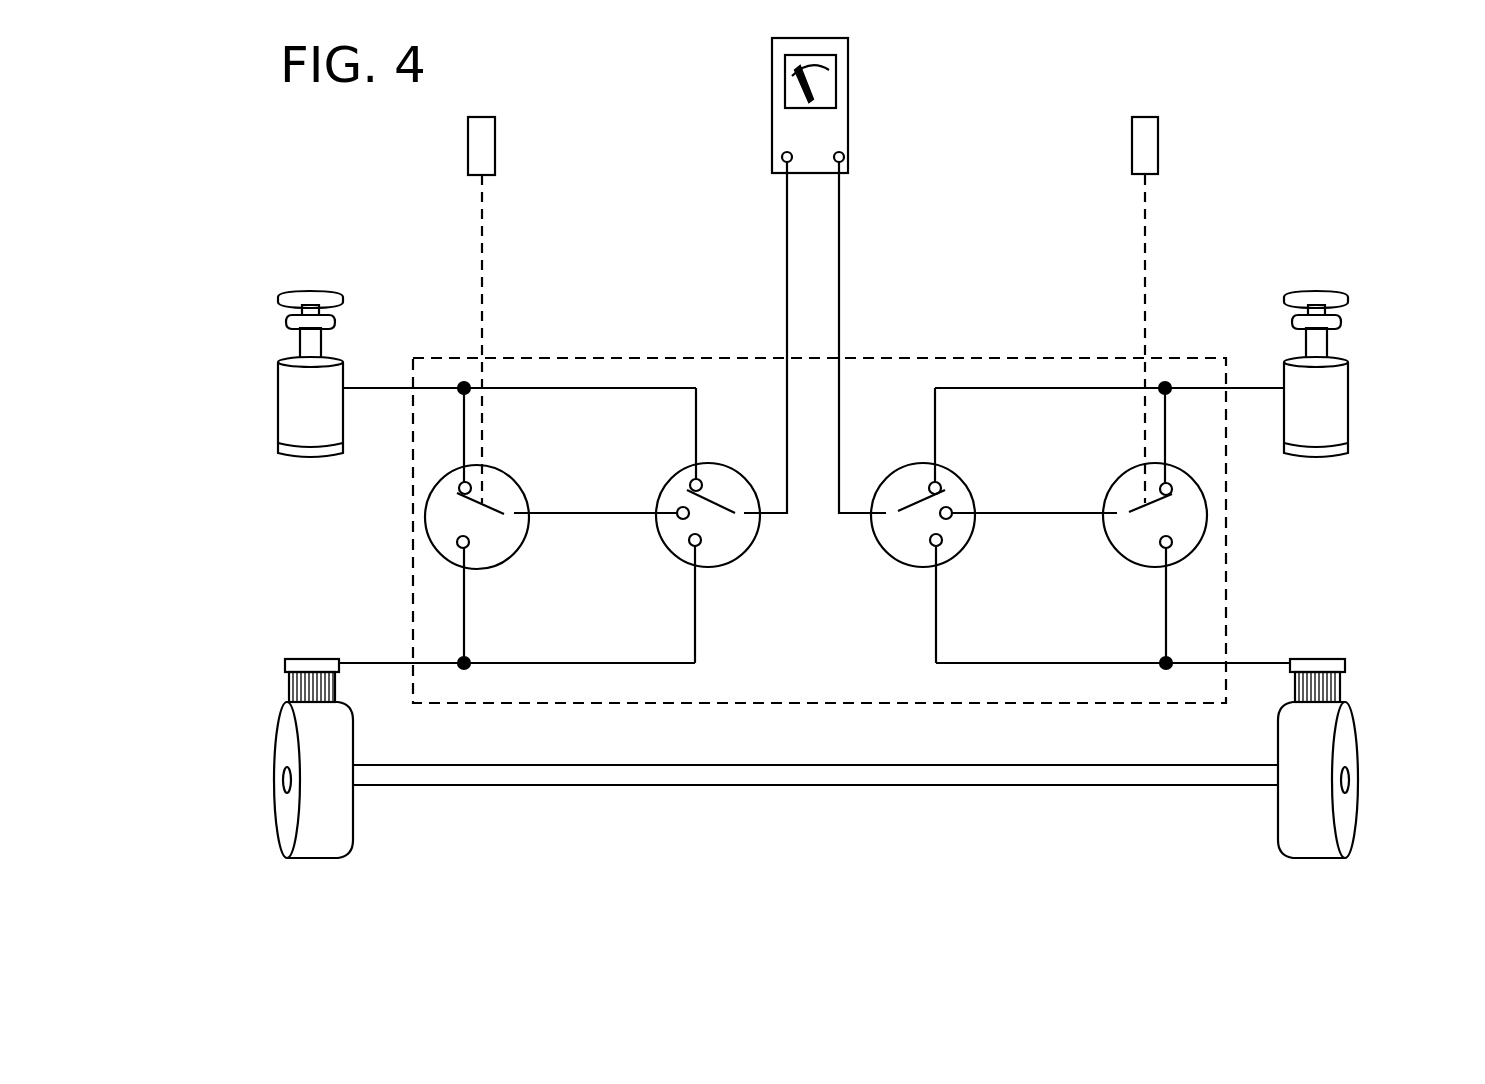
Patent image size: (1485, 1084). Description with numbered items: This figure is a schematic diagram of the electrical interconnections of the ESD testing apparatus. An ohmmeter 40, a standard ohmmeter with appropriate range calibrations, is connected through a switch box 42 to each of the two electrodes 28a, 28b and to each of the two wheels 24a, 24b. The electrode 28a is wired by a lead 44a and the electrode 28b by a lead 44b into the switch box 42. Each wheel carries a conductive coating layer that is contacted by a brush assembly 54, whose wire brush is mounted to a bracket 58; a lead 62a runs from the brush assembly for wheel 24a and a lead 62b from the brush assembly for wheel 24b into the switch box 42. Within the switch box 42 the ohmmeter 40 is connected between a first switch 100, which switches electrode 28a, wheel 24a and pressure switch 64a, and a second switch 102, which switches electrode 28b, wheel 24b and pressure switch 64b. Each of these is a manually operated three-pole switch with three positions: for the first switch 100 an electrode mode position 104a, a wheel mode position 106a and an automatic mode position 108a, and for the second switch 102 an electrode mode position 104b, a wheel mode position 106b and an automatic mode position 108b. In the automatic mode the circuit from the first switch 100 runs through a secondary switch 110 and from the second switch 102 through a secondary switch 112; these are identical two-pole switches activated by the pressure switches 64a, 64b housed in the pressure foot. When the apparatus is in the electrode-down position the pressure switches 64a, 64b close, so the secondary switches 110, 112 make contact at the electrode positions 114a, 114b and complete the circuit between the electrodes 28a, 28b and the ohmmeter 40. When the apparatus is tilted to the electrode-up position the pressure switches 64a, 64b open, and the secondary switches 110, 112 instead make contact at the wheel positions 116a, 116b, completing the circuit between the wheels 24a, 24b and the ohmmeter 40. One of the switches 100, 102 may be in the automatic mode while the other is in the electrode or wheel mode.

The wheel 24a is at (1248, 830).
The wheel 24b is at (385, 832).
The electrode 28a is at (1335, 420).
The electrode 28b is at (290, 410).
The ohmmeter 40 is at (775, 100).
The switch box 42 is at (878, 358).
The lead 44a is at (1258, 388).
The lead 44b is at (375, 388).
The brush assembly 54 is at (278, 655).
The bracket 58 is at (325, 659).
The lead 62a is at (1252, 663).
The lead 62b is at (380, 663).
The pressure switch 64a is at (1158, 142).
The pressure switch 64b is at (468, 142).
The first switch 100 is at (905, 470).
The second switch 102 is at (725, 465).
The electrode mode position 104a is at (945, 480).
The electrode mode position 104b is at (687, 477).
The wheel mode position 106a is at (930, 542).
The wheel mode position 106b is at (701, 542).
The automatic mode position 108a is at (954, 508).
The automatic mode position 108b is at (677, 515).
The secondary switch 110 is at (1208, 517).
The secondary switch 112 is at (425, 516).
The electrode position 114a is at (1177, 481).
The electrode position 114b is at (478, 470).
The wheel position 116a is at (1160, 544).
The wheel position 116b is at (469, 544).